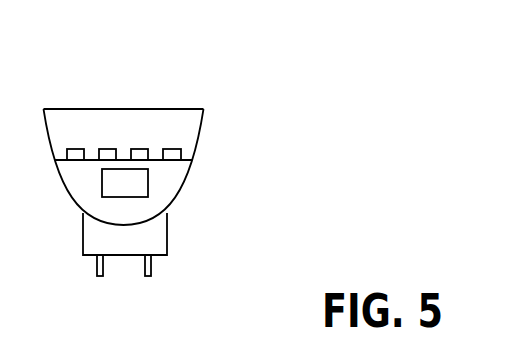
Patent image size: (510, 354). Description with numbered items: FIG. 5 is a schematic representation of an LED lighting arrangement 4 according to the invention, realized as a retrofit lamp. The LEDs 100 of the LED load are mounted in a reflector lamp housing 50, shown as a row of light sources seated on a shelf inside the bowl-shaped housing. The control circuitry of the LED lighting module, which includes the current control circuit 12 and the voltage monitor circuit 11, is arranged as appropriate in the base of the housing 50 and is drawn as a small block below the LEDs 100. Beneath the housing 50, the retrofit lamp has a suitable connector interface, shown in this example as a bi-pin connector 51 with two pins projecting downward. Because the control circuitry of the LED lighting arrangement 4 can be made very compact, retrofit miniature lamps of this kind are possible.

The LED lighting arrangement 4 is at (340, 98).
The reflector lamp housing 50 is at (87, 108).
The LEDs 100 is at (173, 150).
The voltage monitor circuit 11 is at (194, 183).
The current control circuit 12 is at (148, 182).
The bi-pin connector 51 is at (167, 247).